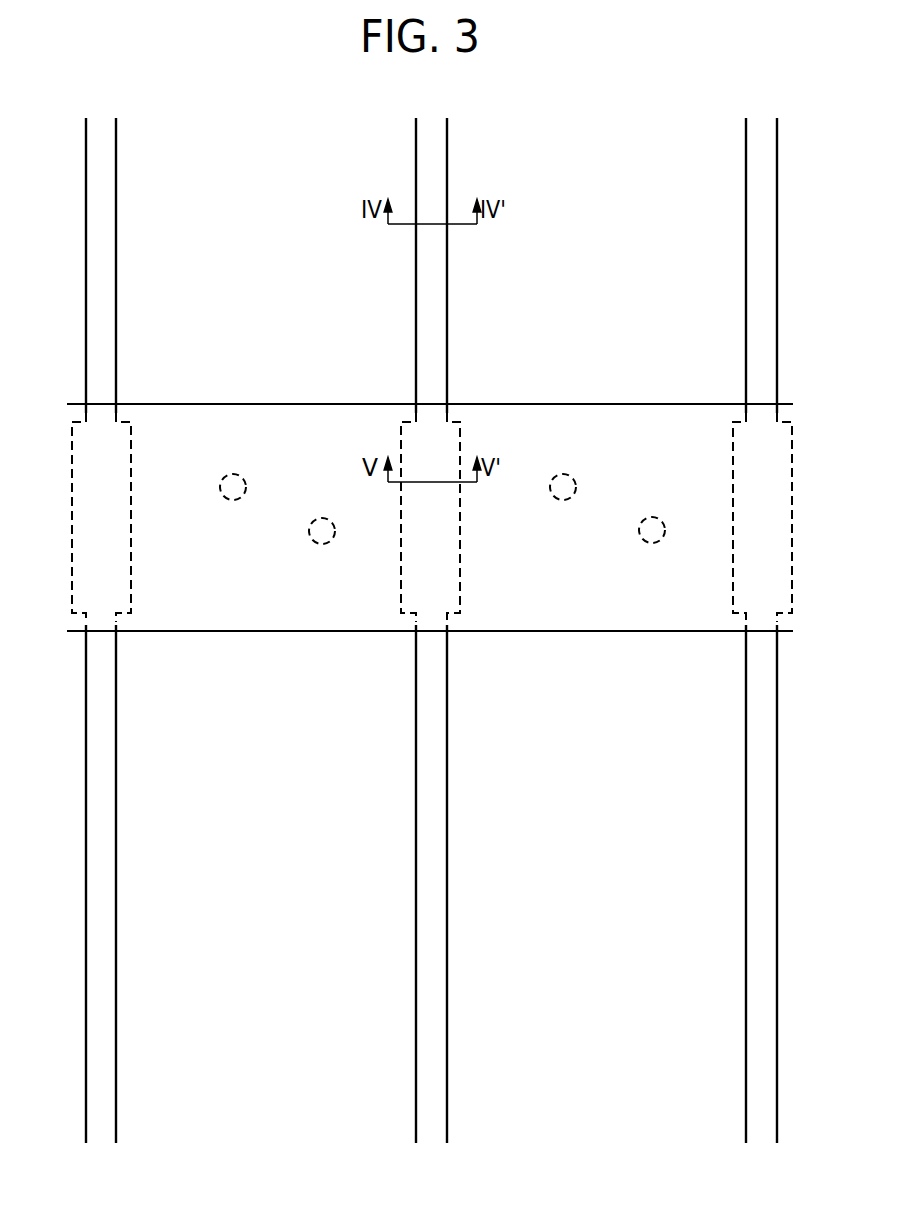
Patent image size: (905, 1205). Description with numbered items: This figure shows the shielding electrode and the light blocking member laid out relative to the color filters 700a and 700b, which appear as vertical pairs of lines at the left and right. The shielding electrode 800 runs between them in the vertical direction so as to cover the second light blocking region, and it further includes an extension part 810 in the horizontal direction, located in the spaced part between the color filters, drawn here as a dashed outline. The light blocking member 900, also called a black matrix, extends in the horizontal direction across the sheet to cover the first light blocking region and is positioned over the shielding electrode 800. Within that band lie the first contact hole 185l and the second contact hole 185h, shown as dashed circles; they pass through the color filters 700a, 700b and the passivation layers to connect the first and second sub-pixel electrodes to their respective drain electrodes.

The color filter 700a is at (275, 160).
The color filter 700b is at (613, 160).
The shielding electrode 800 is at (431, 160).
The light blocking member 900 is at (629, 432).
The extension part 810 is at (461, 553).
The second contact hole 185h is at (234, 473).
The first contact hole 185l is at (322, 517).